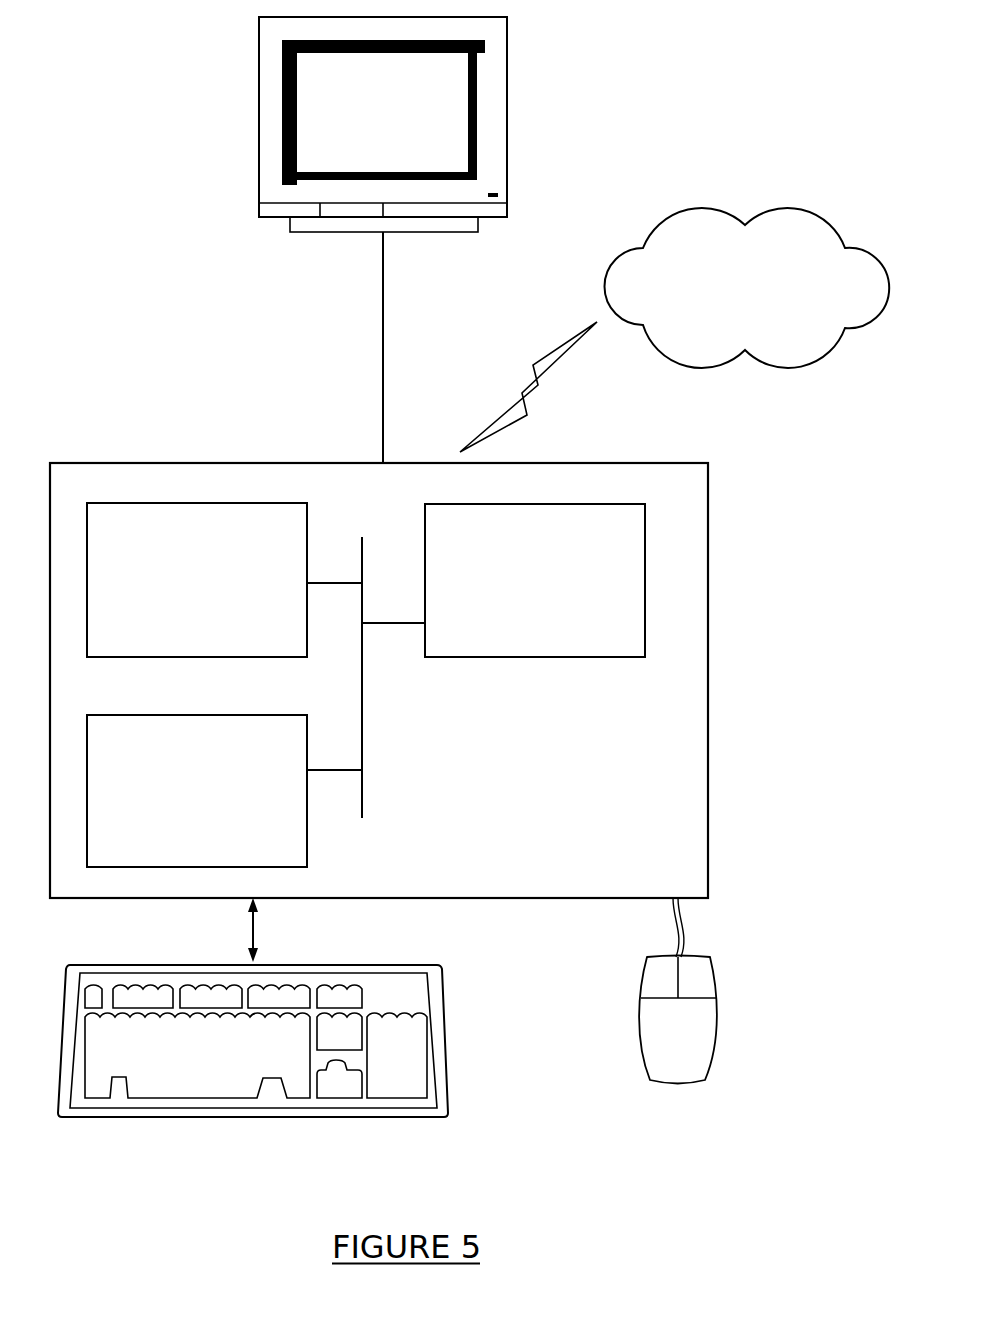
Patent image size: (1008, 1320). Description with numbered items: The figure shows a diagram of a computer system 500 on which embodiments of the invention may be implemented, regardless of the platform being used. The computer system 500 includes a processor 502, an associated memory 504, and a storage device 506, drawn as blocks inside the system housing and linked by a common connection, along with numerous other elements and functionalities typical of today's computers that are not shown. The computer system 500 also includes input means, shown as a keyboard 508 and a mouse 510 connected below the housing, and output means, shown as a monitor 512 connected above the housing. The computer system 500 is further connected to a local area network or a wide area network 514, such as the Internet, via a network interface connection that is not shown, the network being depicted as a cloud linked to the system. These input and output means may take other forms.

The computer system 500 is at (725, 738).
The processor 502 is at (532, 592).
The memory 504 is at (177, 590).
The storage device 506 is at (172, 800).
The keyboard 508 is at (167, 1077).
The mouse 510 is at (658, 1037).
The monitor 512 is at (354, 128).
The wide area network 514 is at (738, 312).